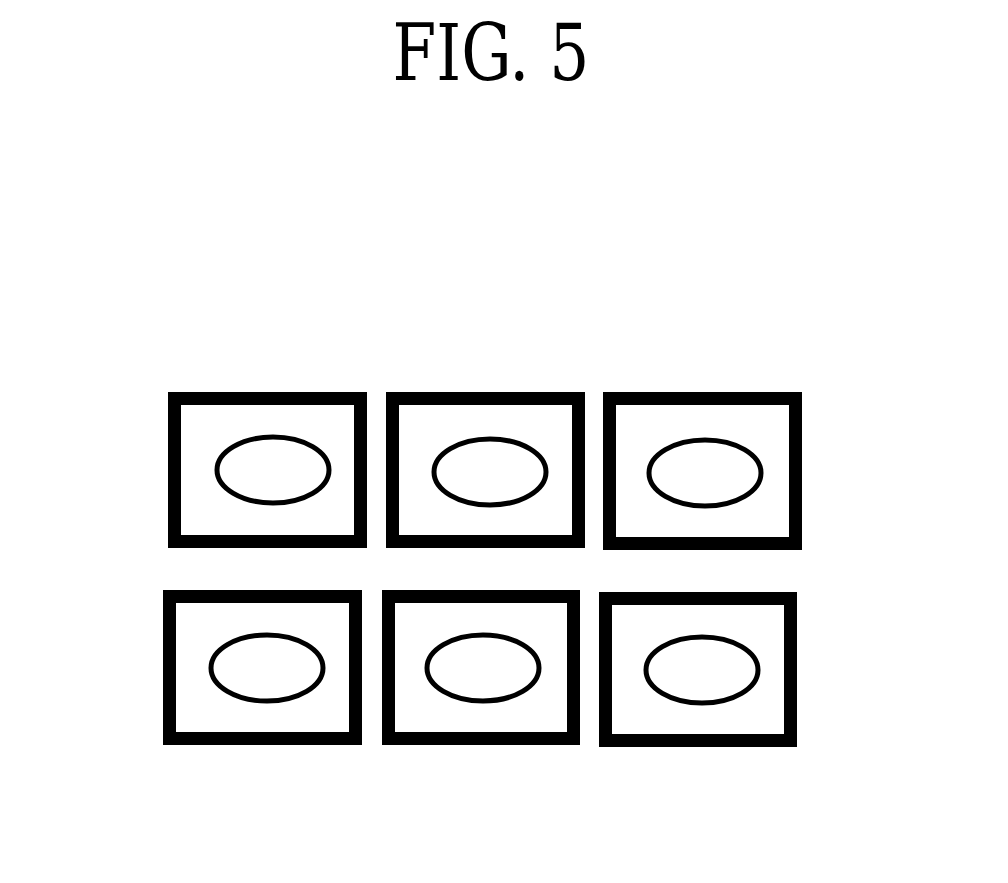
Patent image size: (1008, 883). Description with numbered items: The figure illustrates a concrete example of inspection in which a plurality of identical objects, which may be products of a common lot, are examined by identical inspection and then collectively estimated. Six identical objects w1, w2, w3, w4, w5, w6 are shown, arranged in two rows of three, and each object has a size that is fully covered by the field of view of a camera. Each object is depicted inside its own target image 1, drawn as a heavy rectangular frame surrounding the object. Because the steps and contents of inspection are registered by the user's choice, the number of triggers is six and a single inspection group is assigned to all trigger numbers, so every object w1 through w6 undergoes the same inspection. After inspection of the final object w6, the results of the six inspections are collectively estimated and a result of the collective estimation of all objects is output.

The target image 1 is at (168, 475).
The identical object w1 is at (263, 437).
The identical object w2 is at (508, 438).
The identical object w3 is at (717, 439).
The identical object w4 is at (243, 700).
The identical object w5 is at (482, 698).
The identical object w6 is at (695, 699).